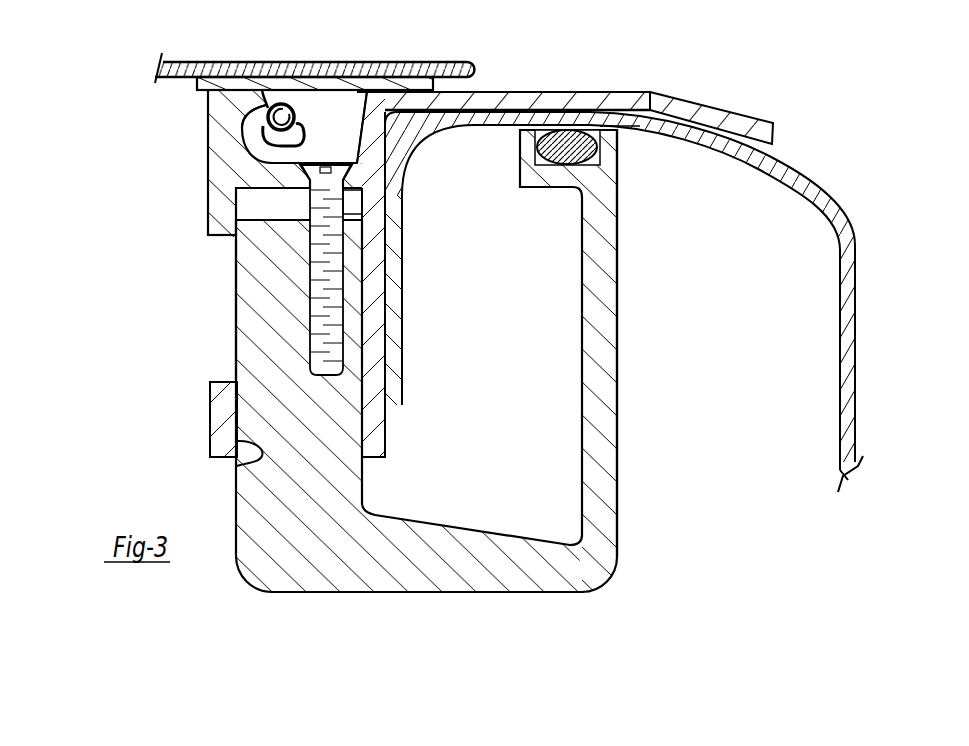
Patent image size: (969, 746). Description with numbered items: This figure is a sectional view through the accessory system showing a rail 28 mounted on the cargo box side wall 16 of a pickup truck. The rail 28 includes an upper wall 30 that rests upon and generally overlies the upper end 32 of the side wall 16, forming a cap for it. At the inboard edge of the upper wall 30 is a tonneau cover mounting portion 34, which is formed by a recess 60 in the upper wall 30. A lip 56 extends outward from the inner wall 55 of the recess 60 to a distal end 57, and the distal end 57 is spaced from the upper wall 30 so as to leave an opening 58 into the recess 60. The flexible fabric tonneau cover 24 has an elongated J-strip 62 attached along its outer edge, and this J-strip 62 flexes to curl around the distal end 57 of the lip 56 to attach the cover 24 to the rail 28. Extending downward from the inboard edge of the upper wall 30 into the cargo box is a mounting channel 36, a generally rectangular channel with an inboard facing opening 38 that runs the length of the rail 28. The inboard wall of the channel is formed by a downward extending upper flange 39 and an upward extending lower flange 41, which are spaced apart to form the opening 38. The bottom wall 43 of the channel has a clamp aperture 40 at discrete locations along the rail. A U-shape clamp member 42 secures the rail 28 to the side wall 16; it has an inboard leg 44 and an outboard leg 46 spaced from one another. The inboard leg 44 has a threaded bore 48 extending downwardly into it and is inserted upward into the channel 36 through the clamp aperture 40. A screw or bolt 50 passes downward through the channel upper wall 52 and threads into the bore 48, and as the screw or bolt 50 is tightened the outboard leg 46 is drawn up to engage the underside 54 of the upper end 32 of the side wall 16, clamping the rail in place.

The side wall 16 is at (845, 272).
The flexible fabric tonneau cover 24 is at (252, 58).
The rail 28 is at (506, 88).
The upper wall 30 is at (592, 92).
The upper end 32 is at (650, 90).
The tonneau cover mounting portion 34 is at (198, 183).
The mounting channel 36 is at (250, 208).
The inboard facing opening 38 is at (212, 337).
The upper flange 39 is at (210, 227).
The clamp aperture 40 is at (258, 458).
The lower flange 41 is at (218, 412).
The clamp member 42 is at (394, 601).
The bottom wall 43 is at (385, 462).
The inboard leg 44 is at (236, 295).
The outboard leg 46 is at (612, 305).
The threaded bore 48 is at (346, 292).
The screw or bolt 50 is at (347, 207).
The channel upper wall 52 is at (250, 133).
The underside 54 is at (628, 127).
The inner wall 55 is at (200, 117).
The lip 56 is at (275, 100).
The distal end 57 is at (293, 118).
The opening 58 is at (416, 94).
The recess 60 is at (344, 108).
The J-strip 62 is at (302, 147).